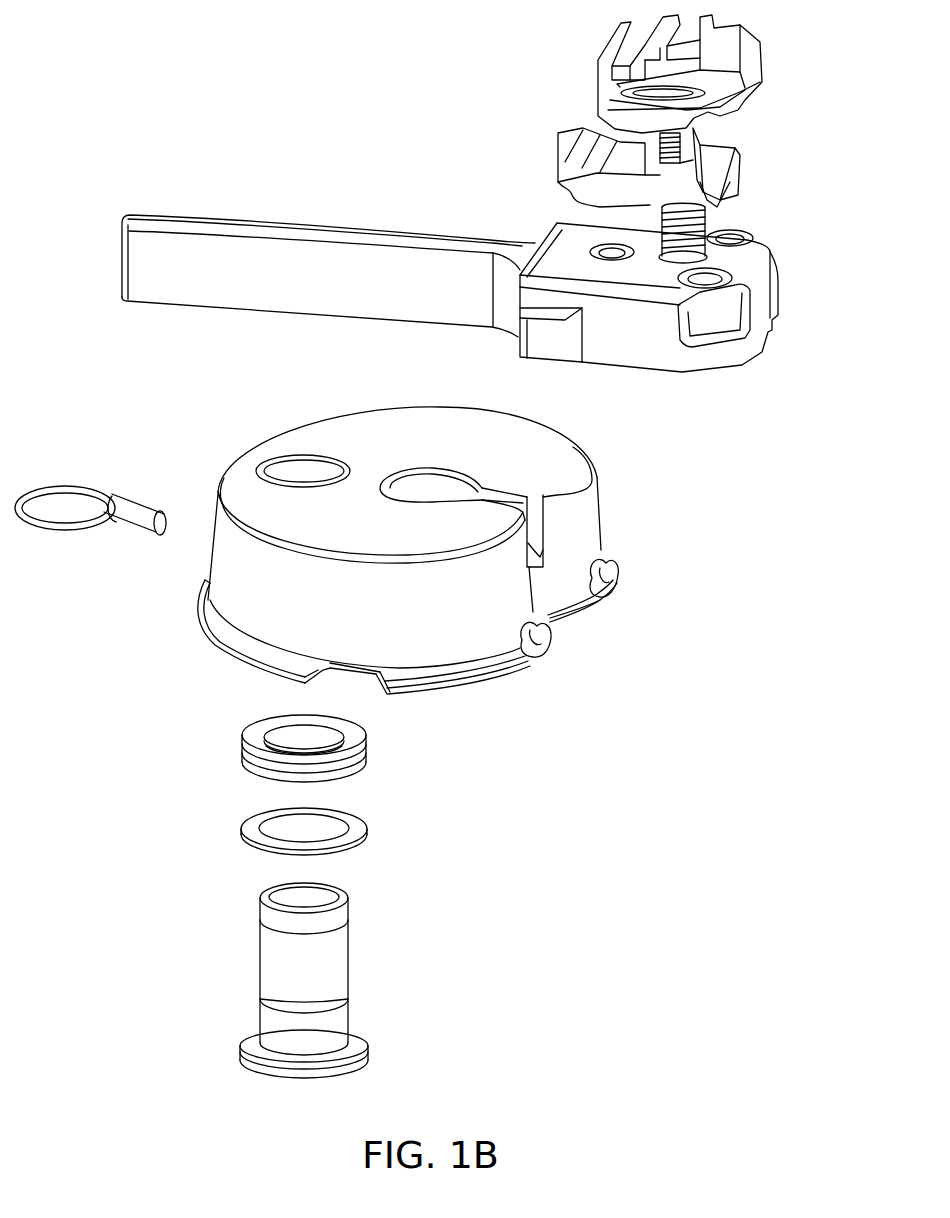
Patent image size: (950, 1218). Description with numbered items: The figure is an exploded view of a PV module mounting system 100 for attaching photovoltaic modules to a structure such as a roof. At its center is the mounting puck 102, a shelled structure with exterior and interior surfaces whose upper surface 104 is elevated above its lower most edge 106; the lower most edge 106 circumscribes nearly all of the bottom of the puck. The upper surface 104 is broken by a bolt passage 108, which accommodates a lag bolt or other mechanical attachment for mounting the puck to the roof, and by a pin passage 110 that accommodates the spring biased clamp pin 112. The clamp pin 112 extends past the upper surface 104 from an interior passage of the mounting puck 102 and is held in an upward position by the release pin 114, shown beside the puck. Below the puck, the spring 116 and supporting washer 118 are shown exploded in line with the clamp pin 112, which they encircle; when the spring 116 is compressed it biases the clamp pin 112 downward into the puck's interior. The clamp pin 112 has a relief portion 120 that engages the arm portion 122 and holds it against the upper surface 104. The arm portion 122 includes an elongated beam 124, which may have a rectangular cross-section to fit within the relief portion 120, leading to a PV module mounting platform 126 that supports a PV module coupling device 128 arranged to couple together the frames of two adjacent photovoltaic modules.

The PV module mounting system 100 is at (253, 43).
The mounting puck 102 is at (602, 518).
The upper surface 104 is at (572, 450).
The lower most edge 106 is at (582, 617).
The bolt passage 108 is at (430, 468).
The pin passage 110 is at (287, 456).
The spring biased clamp pin 112 is at (388, 990).
The release pin 114 is at (20, 503).
The spring 116 is at (388, 769).
The supporting washer 118 is at (388, 847).
The relief portion 120 is at (277, 961).
The arm portion 122 is at (452, 192).
The elongated beam 124 is at (293, 245).
The PV module mounting platform 126 is at (770, 286).
The PV module coupling device 128 is at (779, 114).